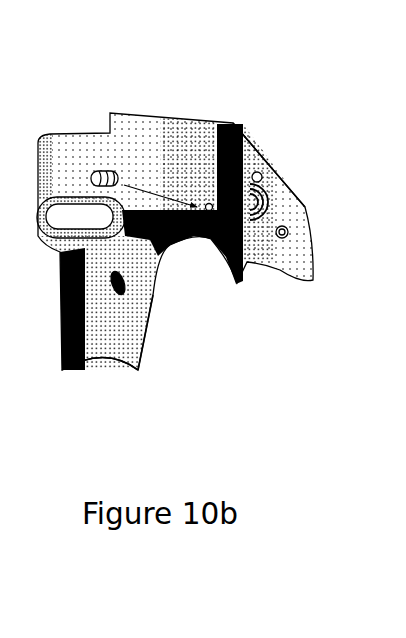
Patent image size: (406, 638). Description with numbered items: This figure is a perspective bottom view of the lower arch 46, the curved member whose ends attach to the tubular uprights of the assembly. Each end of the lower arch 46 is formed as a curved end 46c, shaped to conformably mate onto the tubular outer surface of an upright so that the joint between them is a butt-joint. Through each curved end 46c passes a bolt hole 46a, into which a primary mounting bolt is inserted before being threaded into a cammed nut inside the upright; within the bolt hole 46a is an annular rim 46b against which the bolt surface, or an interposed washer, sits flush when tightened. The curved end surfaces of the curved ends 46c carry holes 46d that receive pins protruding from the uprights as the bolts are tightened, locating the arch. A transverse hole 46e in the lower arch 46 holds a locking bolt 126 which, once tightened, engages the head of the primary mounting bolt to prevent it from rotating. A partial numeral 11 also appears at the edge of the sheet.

The lower arch 46 is at (143, 113).
The bolt hole 46a is at (268, 204).
The annular rim 46b is at (148, 303).
The curved end 46c is at (261, 143).
The hole 46d is at (262, 173).
The transverse hole 46e is at (210, 203).
The locking bolt 126 is at (95, 172).
The adjacent component 11 is at (395, 410).